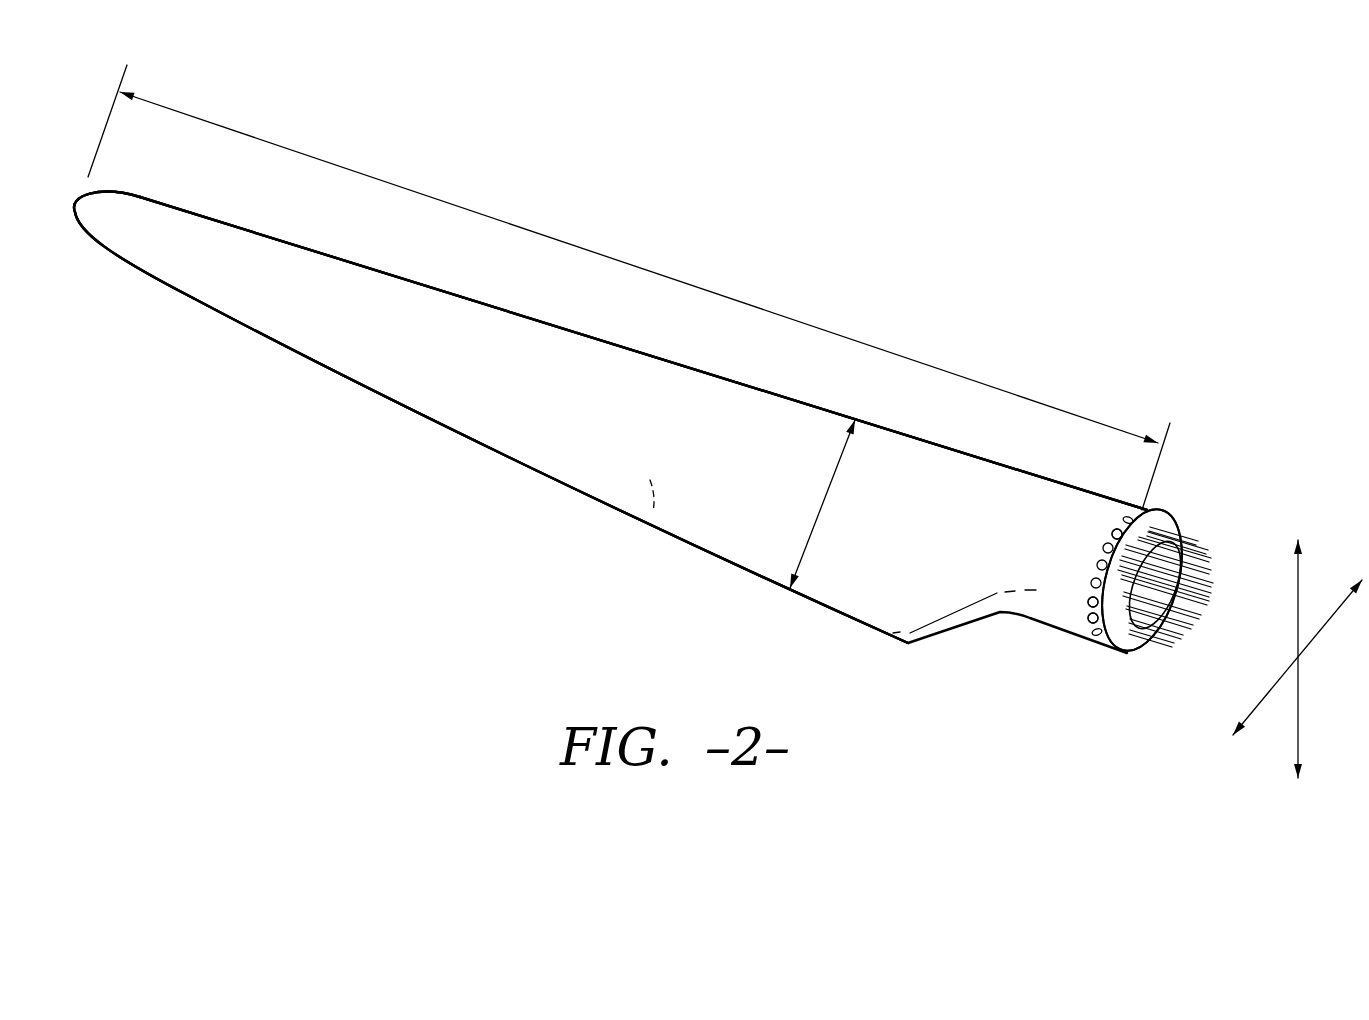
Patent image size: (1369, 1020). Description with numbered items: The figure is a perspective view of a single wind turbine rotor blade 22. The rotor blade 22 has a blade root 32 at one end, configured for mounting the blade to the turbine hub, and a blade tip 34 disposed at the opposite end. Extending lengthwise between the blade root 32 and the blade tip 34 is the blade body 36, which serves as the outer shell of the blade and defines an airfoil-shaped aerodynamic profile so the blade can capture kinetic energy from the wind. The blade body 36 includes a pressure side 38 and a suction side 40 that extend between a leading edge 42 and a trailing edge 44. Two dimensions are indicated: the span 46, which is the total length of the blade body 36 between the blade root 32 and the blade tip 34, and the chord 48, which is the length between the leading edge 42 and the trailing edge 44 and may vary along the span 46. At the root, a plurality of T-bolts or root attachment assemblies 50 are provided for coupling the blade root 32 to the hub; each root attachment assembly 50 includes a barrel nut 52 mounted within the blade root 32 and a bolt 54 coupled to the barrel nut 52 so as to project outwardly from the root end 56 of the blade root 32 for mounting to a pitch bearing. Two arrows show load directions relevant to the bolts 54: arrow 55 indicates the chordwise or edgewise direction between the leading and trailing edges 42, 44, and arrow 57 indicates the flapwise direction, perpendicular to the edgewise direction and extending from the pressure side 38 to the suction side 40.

The rotor blade 22 is at (1030, 292).
The blade root 32 is at (1082, 625).
The blade tip 34 is at (75, 208).
The blade body 36 is at (488, 342).
The pressure side 38 is at (650, 530).
The suction side 40 is at (378, 358).
The leading edge 42 is at (695, 367).
The trailing edge 44 is at (493, 453).
The span 46 is at (673, 280).
The chord 48 is at (820, 512).
The root attachment assembly 50 is at (1092, 540).
The barrel nut 52 is at (1120, 525).
The bolt 54 is at (1210, 560).
The arrow 55 is at (1322, 623).
The root end 56 is at (1137, 653).
The arrow 57 is at (1300, 585).